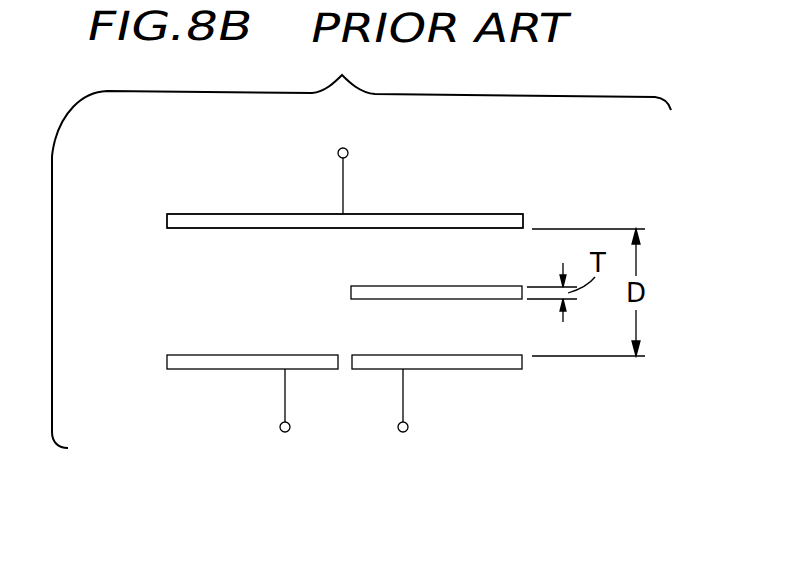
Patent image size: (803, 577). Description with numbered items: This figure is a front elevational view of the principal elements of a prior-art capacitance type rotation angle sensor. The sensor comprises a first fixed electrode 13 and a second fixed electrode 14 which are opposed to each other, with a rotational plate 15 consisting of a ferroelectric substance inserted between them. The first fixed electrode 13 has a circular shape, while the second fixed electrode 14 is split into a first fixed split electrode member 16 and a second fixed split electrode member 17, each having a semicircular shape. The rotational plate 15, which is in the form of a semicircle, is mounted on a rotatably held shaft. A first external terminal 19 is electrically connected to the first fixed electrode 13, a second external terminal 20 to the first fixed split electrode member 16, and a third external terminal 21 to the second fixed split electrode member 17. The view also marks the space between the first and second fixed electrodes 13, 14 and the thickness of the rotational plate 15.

The first fixed electrode 13 is at (432, 214).
The second fixed electrode 14 is at (212, 342).
The rotational plate 15 is at (378, 286).
The first fixed split electrode member 16 is at (183, 370).
The second fixed split electrode member 17 is at (485, 370).
The first external terminal 19 is at (338, 152).
The second external terminal 20 is at (283, 433).
The third external terminal 21 is at (400, 433).